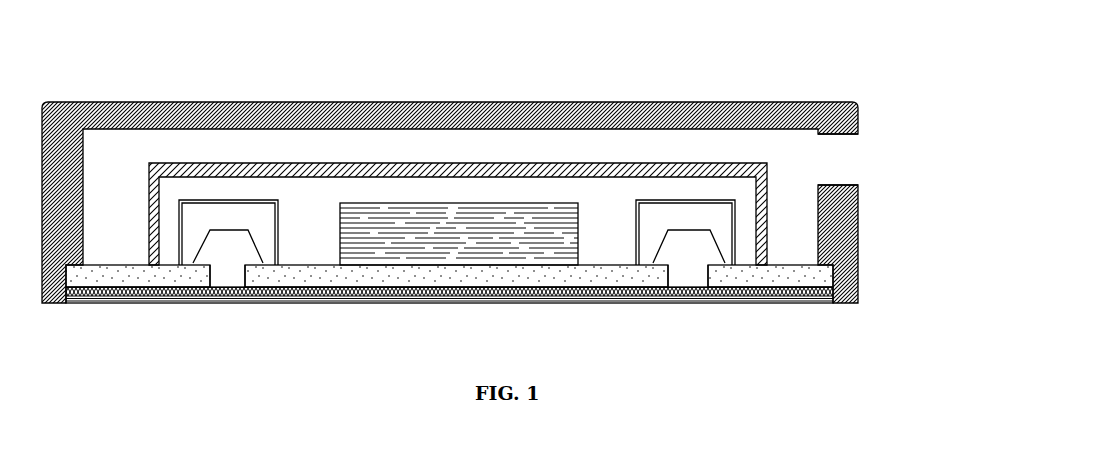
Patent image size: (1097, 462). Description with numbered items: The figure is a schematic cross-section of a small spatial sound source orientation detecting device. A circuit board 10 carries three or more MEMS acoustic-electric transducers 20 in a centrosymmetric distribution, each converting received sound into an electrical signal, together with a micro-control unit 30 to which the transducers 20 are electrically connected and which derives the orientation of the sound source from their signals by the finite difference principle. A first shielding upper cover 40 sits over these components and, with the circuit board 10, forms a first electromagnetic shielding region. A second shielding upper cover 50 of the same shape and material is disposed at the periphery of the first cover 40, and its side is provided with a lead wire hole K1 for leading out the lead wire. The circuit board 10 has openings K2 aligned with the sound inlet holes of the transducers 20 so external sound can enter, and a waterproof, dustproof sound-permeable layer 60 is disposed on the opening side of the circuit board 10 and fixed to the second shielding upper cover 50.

The circuit board 10 is at (118, 276).
The MEMS acoustic-electric transducer 20 is at (262, 214).
The micro-control unit 30 is at (463, 218).
The first shielding upper cover 40 is at (185, 168).
The second shielding upper cover 50 is at (382, 112).
The sound-permeable layer 60 is at (474, 287).
The lead wire hole K1 is at (845, 148).
The opening K2 is at (230, 277).